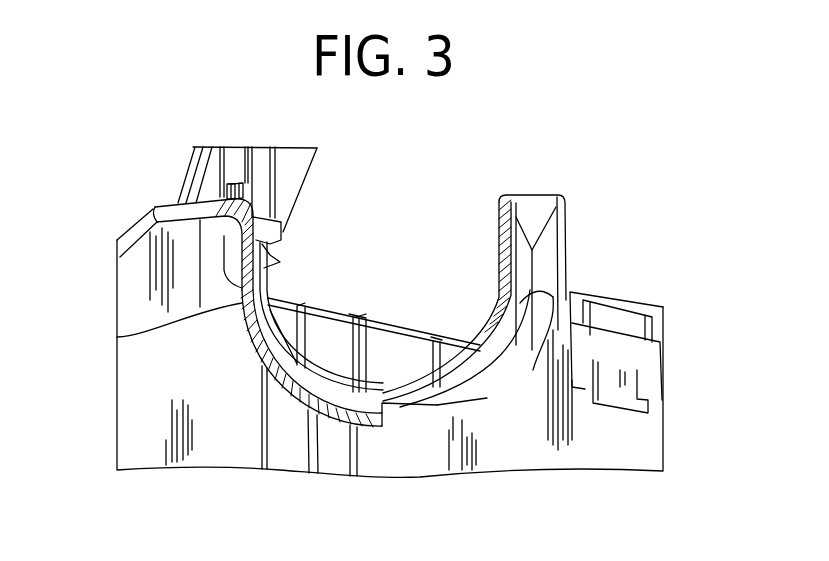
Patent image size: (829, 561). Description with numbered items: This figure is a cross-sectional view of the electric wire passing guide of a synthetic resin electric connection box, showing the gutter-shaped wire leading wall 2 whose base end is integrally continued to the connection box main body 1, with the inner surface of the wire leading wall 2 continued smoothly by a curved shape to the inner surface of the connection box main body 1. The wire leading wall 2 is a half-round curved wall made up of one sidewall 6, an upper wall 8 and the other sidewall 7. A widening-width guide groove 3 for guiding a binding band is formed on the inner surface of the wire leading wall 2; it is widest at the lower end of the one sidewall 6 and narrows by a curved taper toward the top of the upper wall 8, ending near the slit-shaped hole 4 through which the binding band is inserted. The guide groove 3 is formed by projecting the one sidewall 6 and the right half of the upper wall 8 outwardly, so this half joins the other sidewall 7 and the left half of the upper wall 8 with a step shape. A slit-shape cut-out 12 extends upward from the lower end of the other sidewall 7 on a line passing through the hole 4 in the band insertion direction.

The electric connection box main body 1 is at (193, 455).
The wire leading wall 2 is at (258, 357).
The guide groove 3 is at (300, 362).
The hole 4 is at (384, 409).
The one sidewall 6 is at (127, 337).
The other sidewall 7 is at (533, 370).
The upper wall 8 is at (357, 430).
The slit-shape cut-out 12 is at (498, 256).